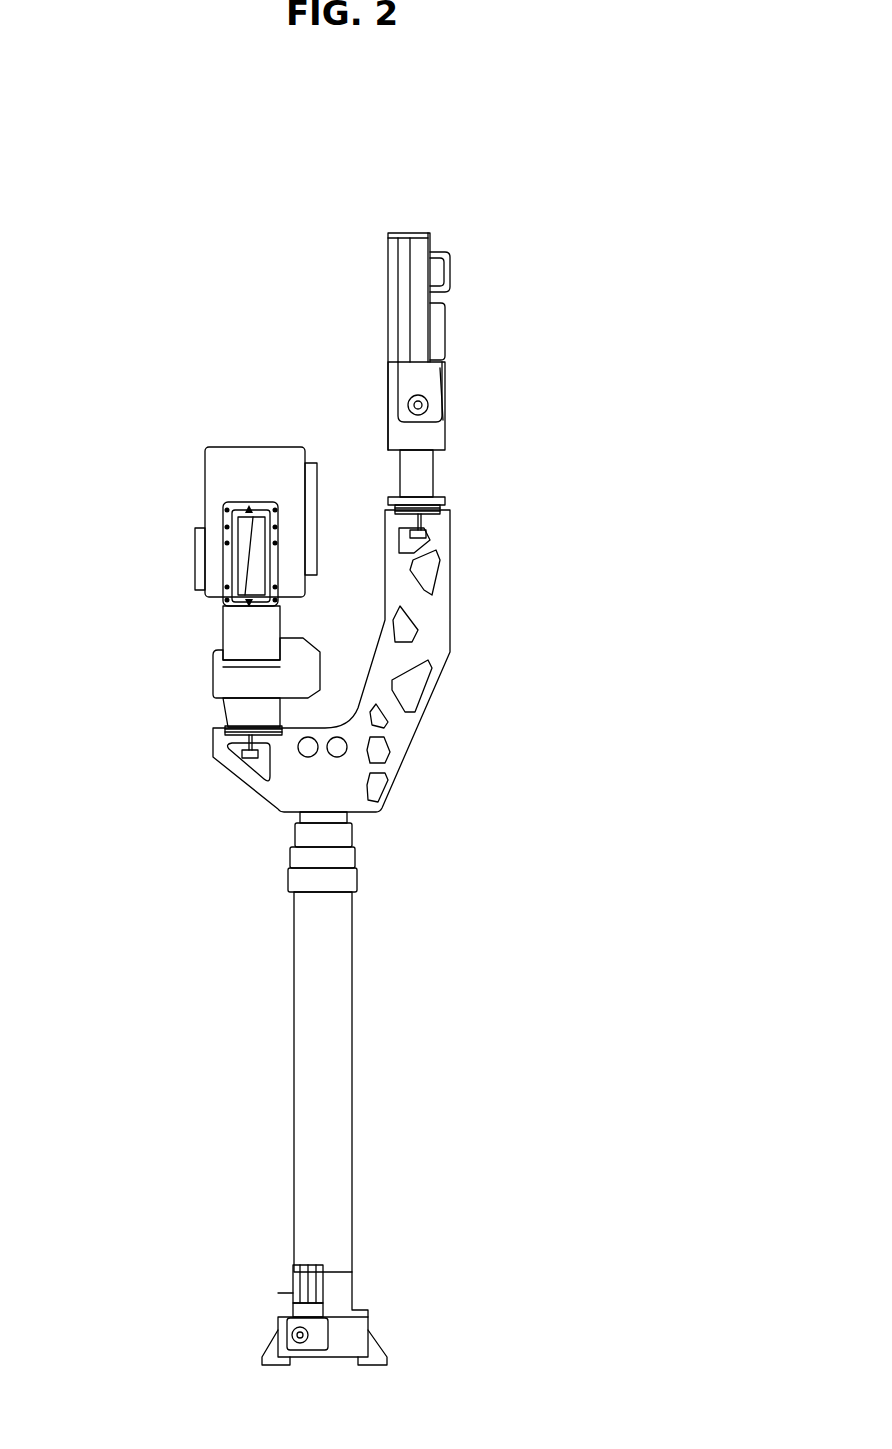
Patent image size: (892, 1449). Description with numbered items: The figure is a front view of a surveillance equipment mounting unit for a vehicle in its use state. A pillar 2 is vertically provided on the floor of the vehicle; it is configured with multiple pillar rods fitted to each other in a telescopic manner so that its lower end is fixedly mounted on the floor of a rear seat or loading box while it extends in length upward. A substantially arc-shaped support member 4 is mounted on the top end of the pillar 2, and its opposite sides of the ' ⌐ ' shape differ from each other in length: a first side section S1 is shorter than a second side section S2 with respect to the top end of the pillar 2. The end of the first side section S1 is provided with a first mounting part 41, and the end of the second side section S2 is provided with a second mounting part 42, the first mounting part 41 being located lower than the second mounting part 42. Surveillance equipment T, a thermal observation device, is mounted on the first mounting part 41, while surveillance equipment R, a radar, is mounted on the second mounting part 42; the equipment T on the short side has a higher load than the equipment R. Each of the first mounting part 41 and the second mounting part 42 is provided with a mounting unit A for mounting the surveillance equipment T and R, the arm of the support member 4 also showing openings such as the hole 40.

The pillar 2 is at (300, 1075).
The support member 4 is at (446, 655).
The hole 40 is at (436, 570).
The first mounting part 41 is at (213, 690).
The second mounting part 42 is at (422, 497).
The mounting unit A is at (447, 514).
The surveillance equipment T is at (203, 472).
The surveillance equipment R is at (423, 275).
The first side section S1 is at (249, 620).
The second side section S2 is at (522, 455).